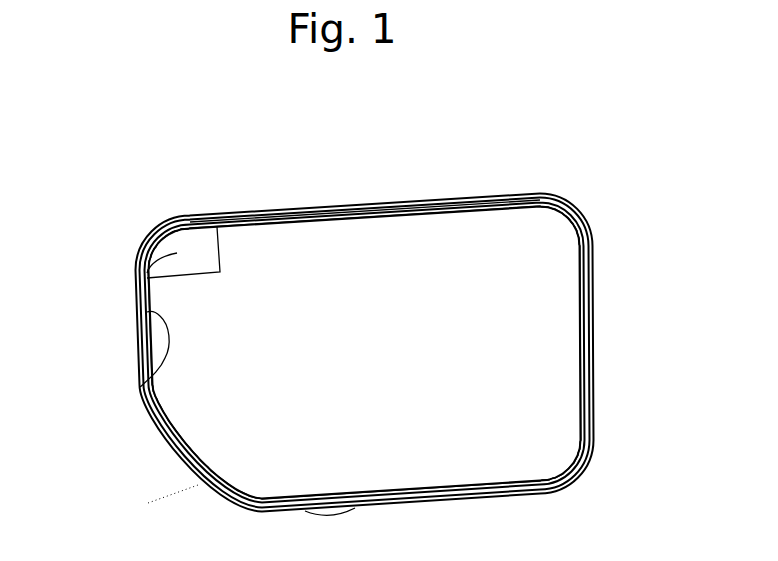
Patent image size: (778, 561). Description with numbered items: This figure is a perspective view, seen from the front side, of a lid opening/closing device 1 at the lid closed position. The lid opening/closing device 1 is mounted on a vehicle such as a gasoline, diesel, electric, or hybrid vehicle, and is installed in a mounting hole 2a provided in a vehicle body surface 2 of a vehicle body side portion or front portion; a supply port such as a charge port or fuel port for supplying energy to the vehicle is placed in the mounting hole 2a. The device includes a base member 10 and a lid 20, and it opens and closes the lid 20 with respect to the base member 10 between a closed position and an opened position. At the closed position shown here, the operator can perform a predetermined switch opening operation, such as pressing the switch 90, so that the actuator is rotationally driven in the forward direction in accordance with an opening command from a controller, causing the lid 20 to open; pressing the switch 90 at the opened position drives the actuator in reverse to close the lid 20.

The lid opening/closing device 1 is at (623, 230).
The vehicle body surface 2 is at (125, 205).
The mounting hole 2a is at (140, 387).
The base member 10 is at (262, 210).
The lid 20 is at (545, 345).
The switch 90 is at (140, 268).